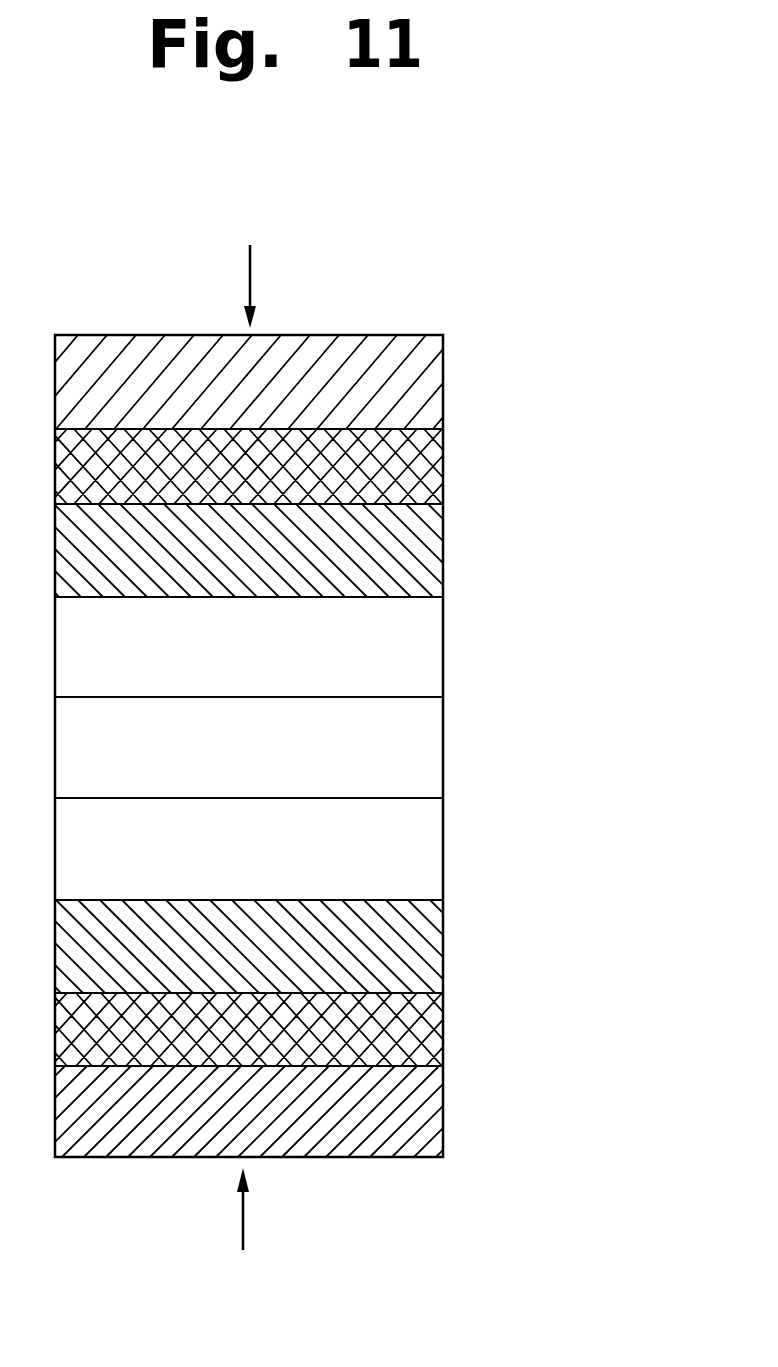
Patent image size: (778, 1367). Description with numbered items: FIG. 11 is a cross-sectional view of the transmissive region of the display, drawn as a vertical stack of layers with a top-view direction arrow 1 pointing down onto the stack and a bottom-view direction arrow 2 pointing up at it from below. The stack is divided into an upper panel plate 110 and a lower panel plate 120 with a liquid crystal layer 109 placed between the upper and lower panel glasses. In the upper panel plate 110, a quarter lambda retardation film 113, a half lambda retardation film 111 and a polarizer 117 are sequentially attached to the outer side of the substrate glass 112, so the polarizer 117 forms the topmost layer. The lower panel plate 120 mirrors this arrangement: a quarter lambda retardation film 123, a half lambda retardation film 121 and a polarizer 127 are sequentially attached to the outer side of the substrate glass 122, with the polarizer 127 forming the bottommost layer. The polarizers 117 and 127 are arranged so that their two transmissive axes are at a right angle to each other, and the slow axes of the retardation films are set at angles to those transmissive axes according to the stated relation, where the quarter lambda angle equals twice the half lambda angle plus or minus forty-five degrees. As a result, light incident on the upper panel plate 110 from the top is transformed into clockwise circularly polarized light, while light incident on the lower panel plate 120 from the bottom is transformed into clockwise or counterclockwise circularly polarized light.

The top view direction arrow 1 is at (336, 266).
The bottom view direction arrow 2 is at (358, 1232).
The upper panel plate 110 is at (344, 516).
The polarizer 117 is at (415, 385).
The half lambda retardation film 111 is at (417, 470).
The quarter lambda retardation film 113 is at (415, 556).
The substrate glass 112 is at (319, 647).
The liquid crystal layer 109 is at (416, 750).
The lower panel plate 120 is at (343, 977).
The substrate glass 122 is at (416, 852).
The quarter lambda retardation film 123 is at (415, 948).
The half lambda retardation film 121 is at (417, 1032).
The polarizer 127 is at (291, 1111).